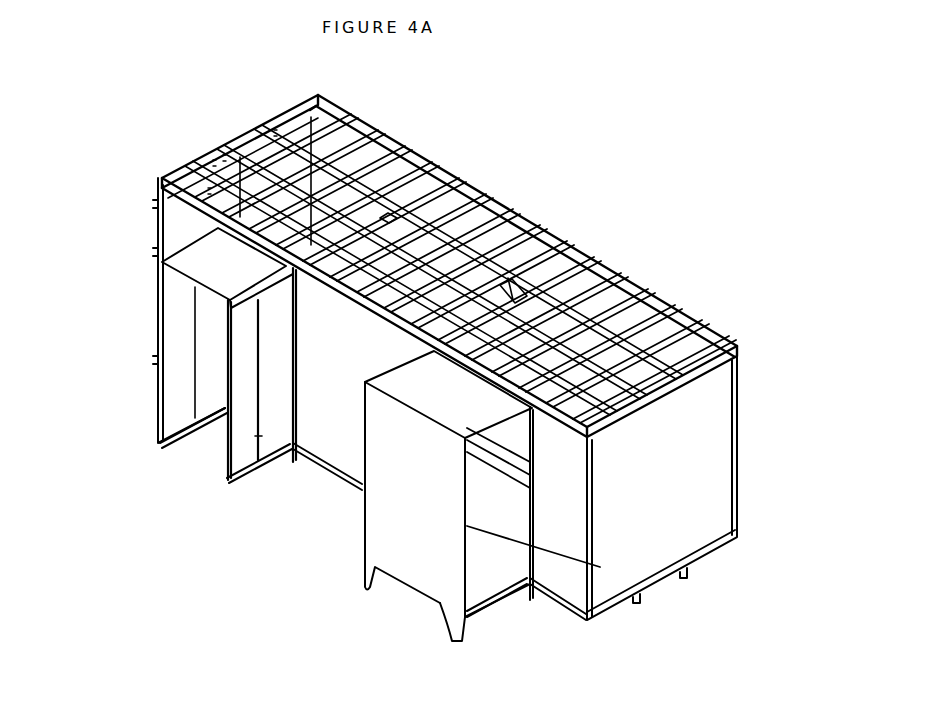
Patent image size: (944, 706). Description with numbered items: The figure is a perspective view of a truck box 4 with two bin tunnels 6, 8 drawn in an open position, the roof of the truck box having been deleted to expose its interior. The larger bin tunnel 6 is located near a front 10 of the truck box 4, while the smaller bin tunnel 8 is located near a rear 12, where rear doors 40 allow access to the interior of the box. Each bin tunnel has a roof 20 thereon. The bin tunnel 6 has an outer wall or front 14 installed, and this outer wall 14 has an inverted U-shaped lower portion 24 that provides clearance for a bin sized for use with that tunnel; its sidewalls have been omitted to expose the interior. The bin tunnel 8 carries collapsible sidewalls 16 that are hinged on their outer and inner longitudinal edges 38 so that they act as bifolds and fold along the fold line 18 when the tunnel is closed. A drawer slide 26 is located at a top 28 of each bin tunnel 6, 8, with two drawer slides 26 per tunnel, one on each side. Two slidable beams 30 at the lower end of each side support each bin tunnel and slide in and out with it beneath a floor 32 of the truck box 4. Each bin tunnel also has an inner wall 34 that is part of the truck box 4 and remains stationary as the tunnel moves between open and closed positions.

The truck box 4 is at (720, 338).
The bin tunnel 6 is at (410, 545).
The bin tunnel 8 is at (163, 390).
The front 10 is at (700, 427).
The rear 12 is at (257, 128).
The outer wall 14 is at (380, 540).
The sidewalls 16 is at (177, 347).
The fold line 18 is at (257, 440).
The roof 20 is at (228, 268).
The inverted U-shaped lower portion 24 is at (438, 603).
The drawer slide 26 is at (420, 240).
The top 28 is at (440, 293).
The slidable beams 30 is at (183, 437).
The floor 32 is at (450, 275).
The inner wall 34 is at (507, 530).
The outer and inner longitudinal edges 38 is at (263, 390).
The rear doors 40 is at (199, 187).